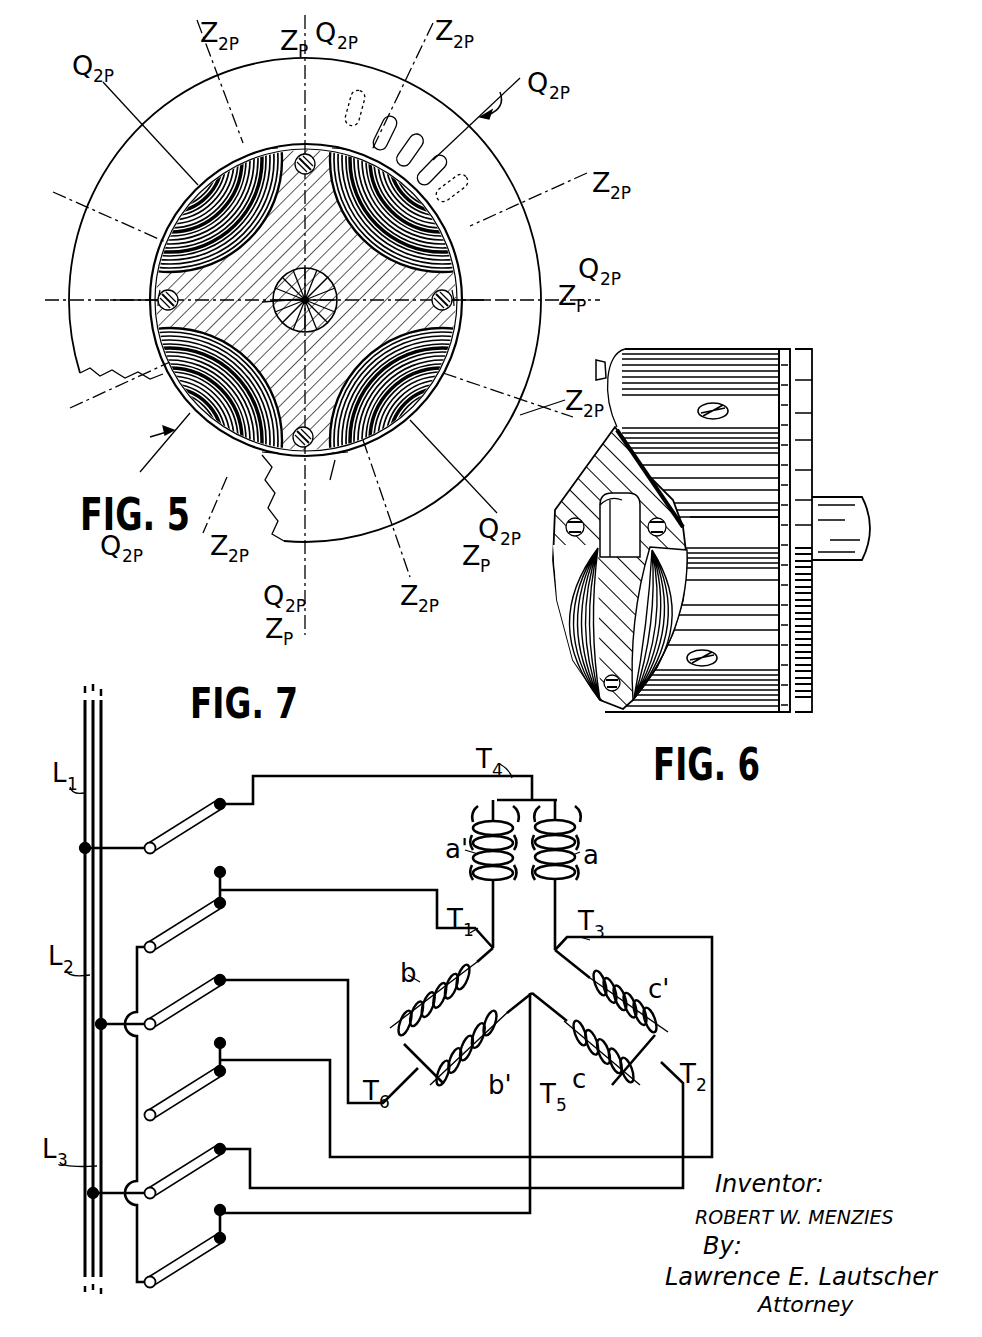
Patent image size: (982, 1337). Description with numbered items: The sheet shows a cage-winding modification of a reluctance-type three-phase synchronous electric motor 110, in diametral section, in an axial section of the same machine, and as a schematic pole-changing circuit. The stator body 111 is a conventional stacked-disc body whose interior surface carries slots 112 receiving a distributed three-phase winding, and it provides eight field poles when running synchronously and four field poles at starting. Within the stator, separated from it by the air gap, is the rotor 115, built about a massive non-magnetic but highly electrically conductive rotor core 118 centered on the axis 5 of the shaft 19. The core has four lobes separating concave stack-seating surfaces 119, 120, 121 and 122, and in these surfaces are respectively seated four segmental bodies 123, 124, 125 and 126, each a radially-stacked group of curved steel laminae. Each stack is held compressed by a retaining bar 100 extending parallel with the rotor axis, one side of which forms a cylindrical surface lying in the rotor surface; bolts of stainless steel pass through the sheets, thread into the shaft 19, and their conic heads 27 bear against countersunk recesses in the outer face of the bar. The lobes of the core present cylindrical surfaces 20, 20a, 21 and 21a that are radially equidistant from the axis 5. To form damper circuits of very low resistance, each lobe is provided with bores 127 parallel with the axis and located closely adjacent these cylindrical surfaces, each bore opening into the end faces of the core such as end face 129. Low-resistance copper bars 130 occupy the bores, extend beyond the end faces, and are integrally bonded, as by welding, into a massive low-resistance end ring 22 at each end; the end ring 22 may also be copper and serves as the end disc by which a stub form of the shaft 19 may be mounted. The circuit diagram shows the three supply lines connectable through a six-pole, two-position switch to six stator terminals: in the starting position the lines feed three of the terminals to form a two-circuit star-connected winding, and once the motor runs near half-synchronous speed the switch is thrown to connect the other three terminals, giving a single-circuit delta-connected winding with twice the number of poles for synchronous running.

In FIG. 5, the axis 5 is at (279, 297).
In FIG. 5, the shaft 19 is at (338, 299).
In FIG. 6, the shaft 19 is at (858, 560).
In FIG. 5, the cylindrical surface 20 is at (305, 145).
In FIG. 6, the cylindrical surface 20 is at (685, 350).
In FIG. 5, the cylindrical surface 20a is at (316, 495).
In FIG. 6, the cylindrical surface 20a is at (655, 714).
In FIG. 5, the cylindrical surface 21 is at (121, 306).
In FIG. 5, the cylindrical surface 21a is at (492, 305).
In FIG. 6, the cylindrical surface 21a is at (734, 528).
In FIG. 6, the end ring 22 is at (812, 643).
In FIG. 6, the conic head 27 is at (725, 531).
In FIG. 5, the retaining bar 100 is at (306, 300).
In FIG. 6, the retaining bar 100 is at (694, 546).
In FIG. 5, the three-phase synchronous electric motor 110 is at (478, 98).
In FIG. 5, the stator body 111 is at (183, 100).
In FIG. 5, the slots 112 is at (407, 147).
In FIG. 5, the rotor 115 is at (143, 432).
In FIG. 6, the rotor 115 is at (594, 472).
In FIG. 5, the rotor core 118 is at (339, 375).
In FIG. 5, the concave stack-seating surface 119 is at (250, 240).
In FIG. 5, the concave stack-seating surface 120 is at (353, 250).
In FIG. 5, the concave stack-seating surface 121 is at (350, 350).
In FIG. 5, the concave stack-seating surface 122 is at (252, 354).
In FIG. 5, the segmental body 123 is at (165, 226).
In FIG. 5, the segmental body 124 is at (452, 249).
In FIG. 6, the segmental body 124 is at (700, 462).
In FIG. 5, the segmental body 125 is at (371, 446).
In FIG. 6, the segmental body 125 is at (700, 593).
In FIG. 5, the segmental body 126 is at (243, 449).
In FIG. 6, the segmental body 126 is at (565, 598).
In FIG. 5, the bores 127 is at (290, 146).
In FIG. 6, the end face 129 is at (783, 455).
In FIG. 5, the copper bars 130 is at (315, 150).
In FIG. 6, the copper bars 130 is at (600, 362).